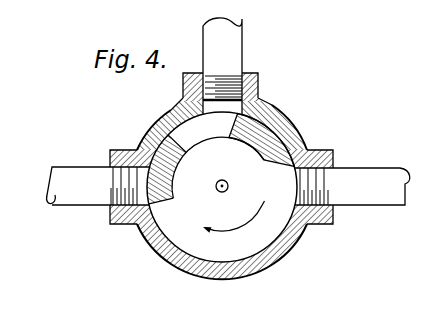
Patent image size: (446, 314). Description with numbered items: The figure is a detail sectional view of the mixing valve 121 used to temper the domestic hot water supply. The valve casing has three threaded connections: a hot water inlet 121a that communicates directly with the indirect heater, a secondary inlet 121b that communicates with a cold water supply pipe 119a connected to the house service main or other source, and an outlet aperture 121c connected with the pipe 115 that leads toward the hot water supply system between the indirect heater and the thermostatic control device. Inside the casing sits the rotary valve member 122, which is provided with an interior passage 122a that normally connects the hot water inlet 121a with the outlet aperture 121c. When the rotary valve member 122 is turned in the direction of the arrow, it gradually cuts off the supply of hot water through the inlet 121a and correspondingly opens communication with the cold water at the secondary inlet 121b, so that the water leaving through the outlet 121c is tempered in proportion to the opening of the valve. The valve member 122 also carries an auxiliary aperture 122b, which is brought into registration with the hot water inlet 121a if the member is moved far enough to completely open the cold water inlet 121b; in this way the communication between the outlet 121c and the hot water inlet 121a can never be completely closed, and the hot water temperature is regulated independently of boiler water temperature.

The pipe 115 is at (236, 57).
The cold water supply pipe 119a is at (78, 200).
The mixing valve 121 is at (186, 273).
The inlet 121a is at (305, 226).
The secondary inlet 121b is at (137, 150).
The outlet aperture 121c is at (260, 101).
The rotary valve member 122 is at (173, 194).
The interior passage 122a is at (213, 132).
The auxiliary aperture 122b is at (308, 146).